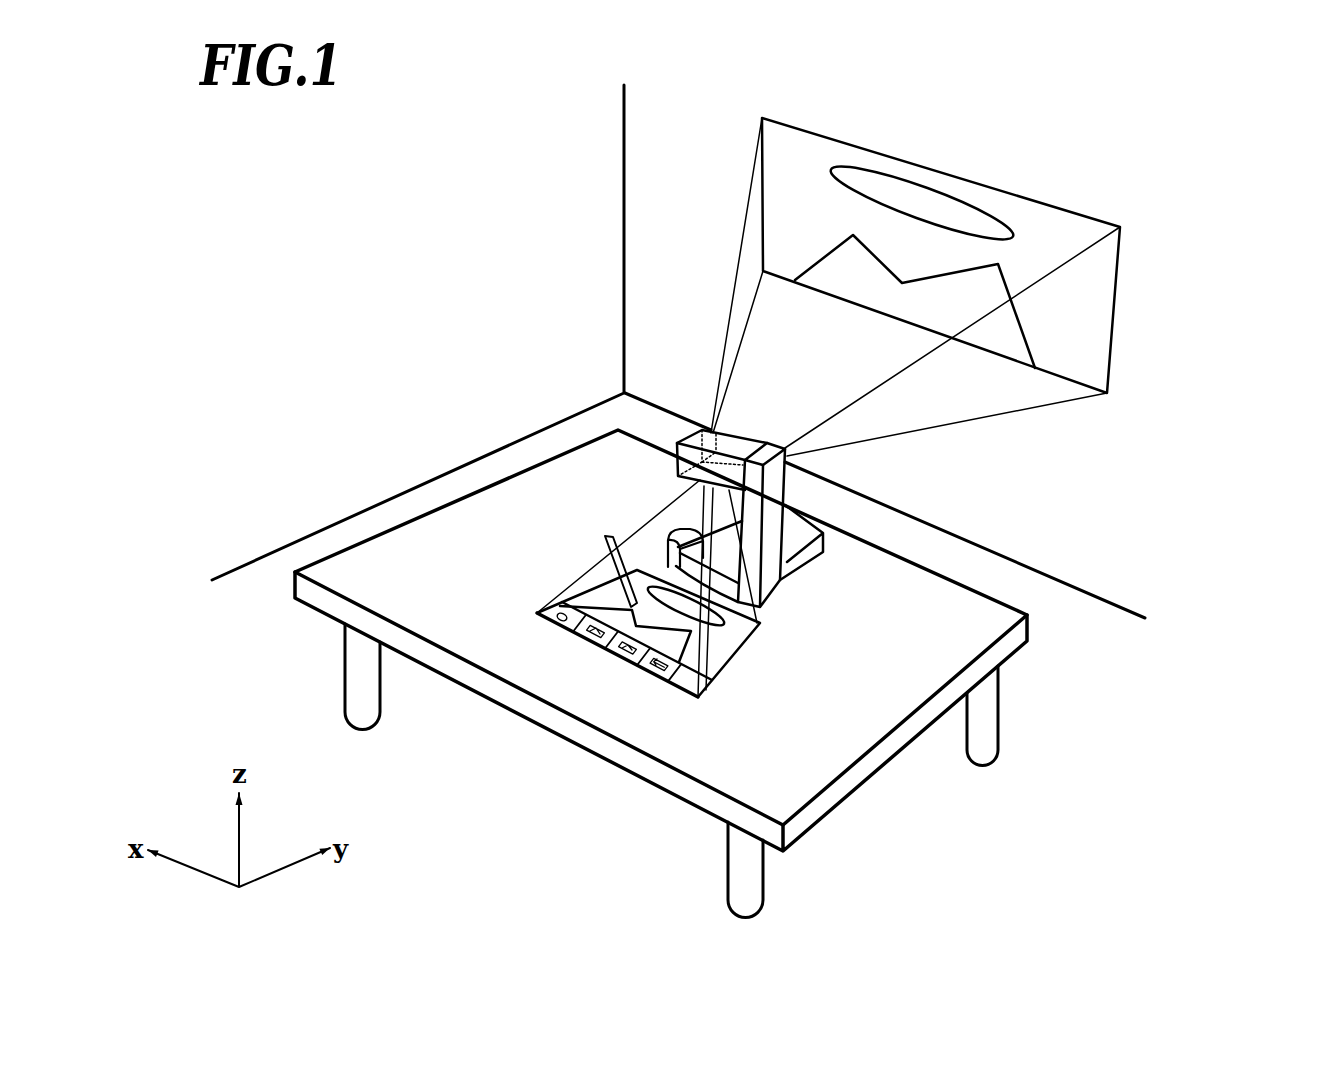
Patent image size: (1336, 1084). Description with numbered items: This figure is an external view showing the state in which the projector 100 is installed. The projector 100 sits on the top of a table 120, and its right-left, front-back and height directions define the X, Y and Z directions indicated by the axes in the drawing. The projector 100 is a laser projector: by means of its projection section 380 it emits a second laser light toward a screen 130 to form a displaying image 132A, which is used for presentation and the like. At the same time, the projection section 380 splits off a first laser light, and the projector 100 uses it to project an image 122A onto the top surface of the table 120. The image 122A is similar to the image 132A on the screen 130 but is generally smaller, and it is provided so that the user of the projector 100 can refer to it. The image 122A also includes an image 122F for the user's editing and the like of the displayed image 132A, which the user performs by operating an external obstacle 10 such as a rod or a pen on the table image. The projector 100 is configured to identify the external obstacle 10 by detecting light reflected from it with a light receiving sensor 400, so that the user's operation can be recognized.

The external obstacle 10 is at (605, 536).
The projector 100 is at (786, 593).
The table 120 is at (1027, 627).
The image 122A is at (699, 665).
The image for editing 122F is at (662, 683).
The screen 130 is at (1048, 494).
The displaying image 132A is at (1135, 300).
The projection section 380 is at (690, 432).
The light receiving sensor 400 is at (725, 588).